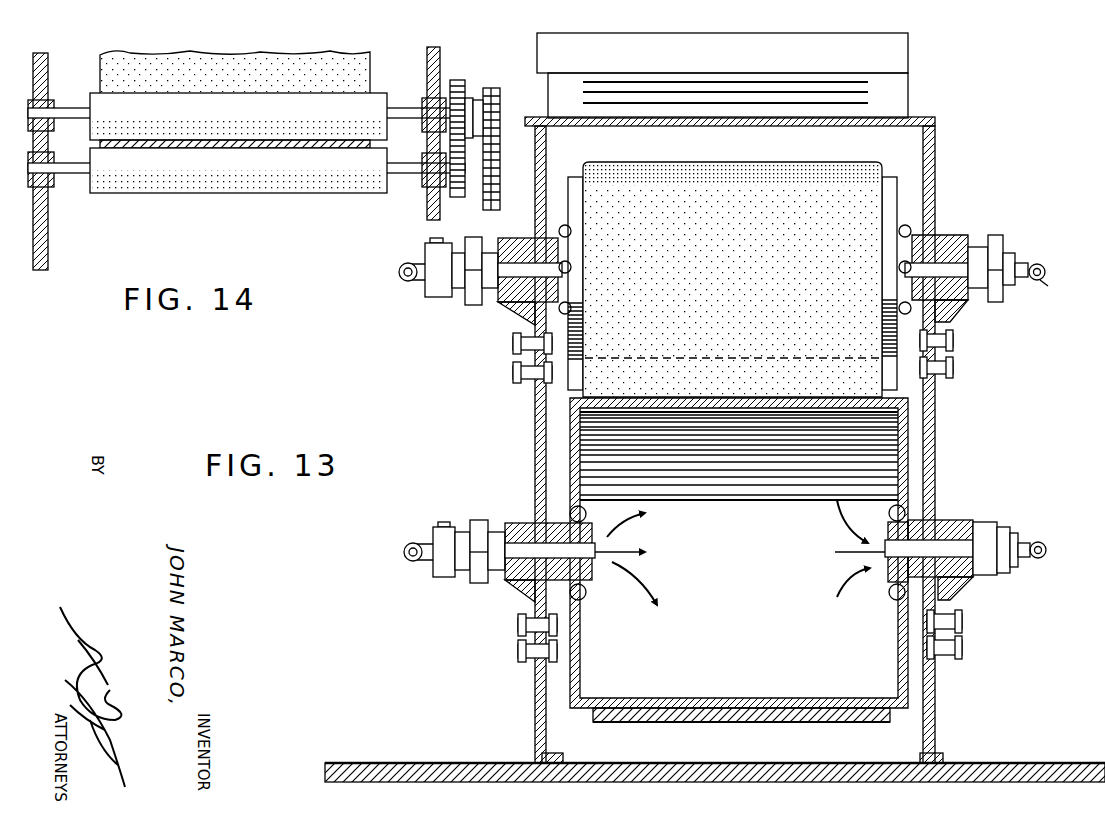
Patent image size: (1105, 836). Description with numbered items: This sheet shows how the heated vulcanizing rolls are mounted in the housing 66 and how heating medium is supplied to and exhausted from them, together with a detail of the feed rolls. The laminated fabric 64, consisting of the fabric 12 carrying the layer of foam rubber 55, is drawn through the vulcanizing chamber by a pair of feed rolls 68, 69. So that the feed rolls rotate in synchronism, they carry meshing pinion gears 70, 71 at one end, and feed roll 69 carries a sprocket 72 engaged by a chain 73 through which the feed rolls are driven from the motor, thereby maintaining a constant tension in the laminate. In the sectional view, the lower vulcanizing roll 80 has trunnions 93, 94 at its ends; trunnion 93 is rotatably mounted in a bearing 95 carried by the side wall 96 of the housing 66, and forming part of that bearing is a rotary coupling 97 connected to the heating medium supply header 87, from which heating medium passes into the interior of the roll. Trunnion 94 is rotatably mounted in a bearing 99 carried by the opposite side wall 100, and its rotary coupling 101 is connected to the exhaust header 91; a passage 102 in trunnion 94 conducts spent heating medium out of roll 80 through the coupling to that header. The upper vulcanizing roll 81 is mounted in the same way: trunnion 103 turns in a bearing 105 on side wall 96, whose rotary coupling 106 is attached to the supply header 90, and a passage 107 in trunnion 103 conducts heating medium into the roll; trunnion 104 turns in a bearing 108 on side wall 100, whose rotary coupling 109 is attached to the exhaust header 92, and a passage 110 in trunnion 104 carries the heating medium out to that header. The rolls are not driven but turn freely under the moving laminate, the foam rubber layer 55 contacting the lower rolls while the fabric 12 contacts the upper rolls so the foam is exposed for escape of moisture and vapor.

In FIG. 13, the fabric 12 is at (702, 723).
In FIG. 13, the layer of foam rubber 55 is at (798, 723).
In FIG. 14, the laminated fabric 64 is at (88, 146).
In FIG. 13, the laminated fabric 64 is at (753, 725).
In FIG. 13, the housing 66 is at (935, 120).
In FIG. 14, the feed roll 68 is at (277, 147).
In FIG. 14, the feed roll 69 is at (313, 193).
In FIG. 14, the pinion gear 70 is at (457, 80).
In FIG. 14, the pinion gear 71 is at (445, 195).
In FIG. 14, the sprocket 72 is at (493, 88).
In FIG. 14, the chain 73 is at (498, 163).
In FIG. 13, the vulcanizing roll 80 is at (897, 645).
In FIG. 13, the upper vulcanizing roll 81 is at (587, 175).
In FIG. 13, the header 87 is at (405, 557).
In FIG. 13, the header 90 is at (405, 284).
In FIG. 13, the exhaust header 91 is at (1045, 554).
In FIG. 13, the exhaust header 92 is at (1045, 290).
In FIG. 13, the trunnion 93 is at (512, 585).
In FIG. 13, the trunnion 94 is at (913, 527).
In FIG. 13, the bearing 95 is at (513, 523).
In FIG. 13, the side wall 96 is at (540, 686).
In FIG. 13, the rotary coupling 97 is at (477, 522).
In FIG. 13, the bearing 99 is at (960, 520).
In FIG. 13, the side wall 100 is at (943, 693).
In FIG. 13, the rotary coupling 101 is at (1000, 522).
In FIG. 13, the passage 102 is at (893, 554).
In FIG. 13, the trunnion 103 is at (550, 245).
In FIG. 13, the trunnion 104 is at (910, 248).
In FIG. 13, the bearing 105 is at (528, 240).
In FIG. 13, the rotary coupling 106 is at (472, 305).
In FIG. 13, the passage 107 is at (520, 312).
In FIG. 13, the bearing 108 is at (967, 238).
In FIG. 13, the rotary coupling 109 is at (1000, 247).
In FIG. 13, the passage 110 is at (945, 312).